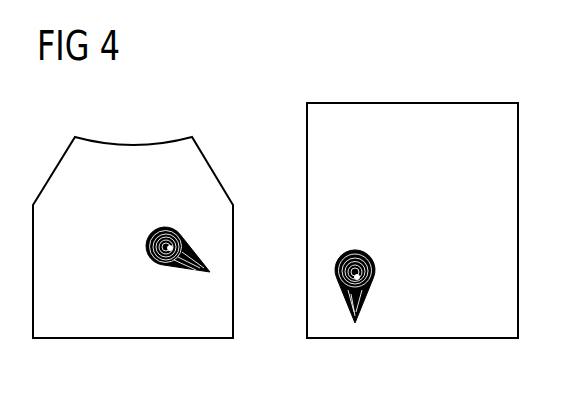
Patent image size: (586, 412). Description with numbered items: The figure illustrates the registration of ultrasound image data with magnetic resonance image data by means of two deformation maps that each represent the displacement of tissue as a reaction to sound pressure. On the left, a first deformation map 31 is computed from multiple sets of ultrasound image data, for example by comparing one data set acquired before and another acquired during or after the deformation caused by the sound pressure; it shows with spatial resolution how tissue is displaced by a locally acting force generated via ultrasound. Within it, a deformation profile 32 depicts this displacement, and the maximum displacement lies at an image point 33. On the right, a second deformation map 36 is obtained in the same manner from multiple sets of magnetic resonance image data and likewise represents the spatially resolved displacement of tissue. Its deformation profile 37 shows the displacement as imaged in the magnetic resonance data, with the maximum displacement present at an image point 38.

The first deformation map 31 is at (133, 143).
The deformation profile 32 is at (148, 240).
The image point 33 is at (170, 248).
The second deformation map 36 is at (412, 103).
The deformation profile 37 is at (355, 250).
The image point 38 is at (357, 277).